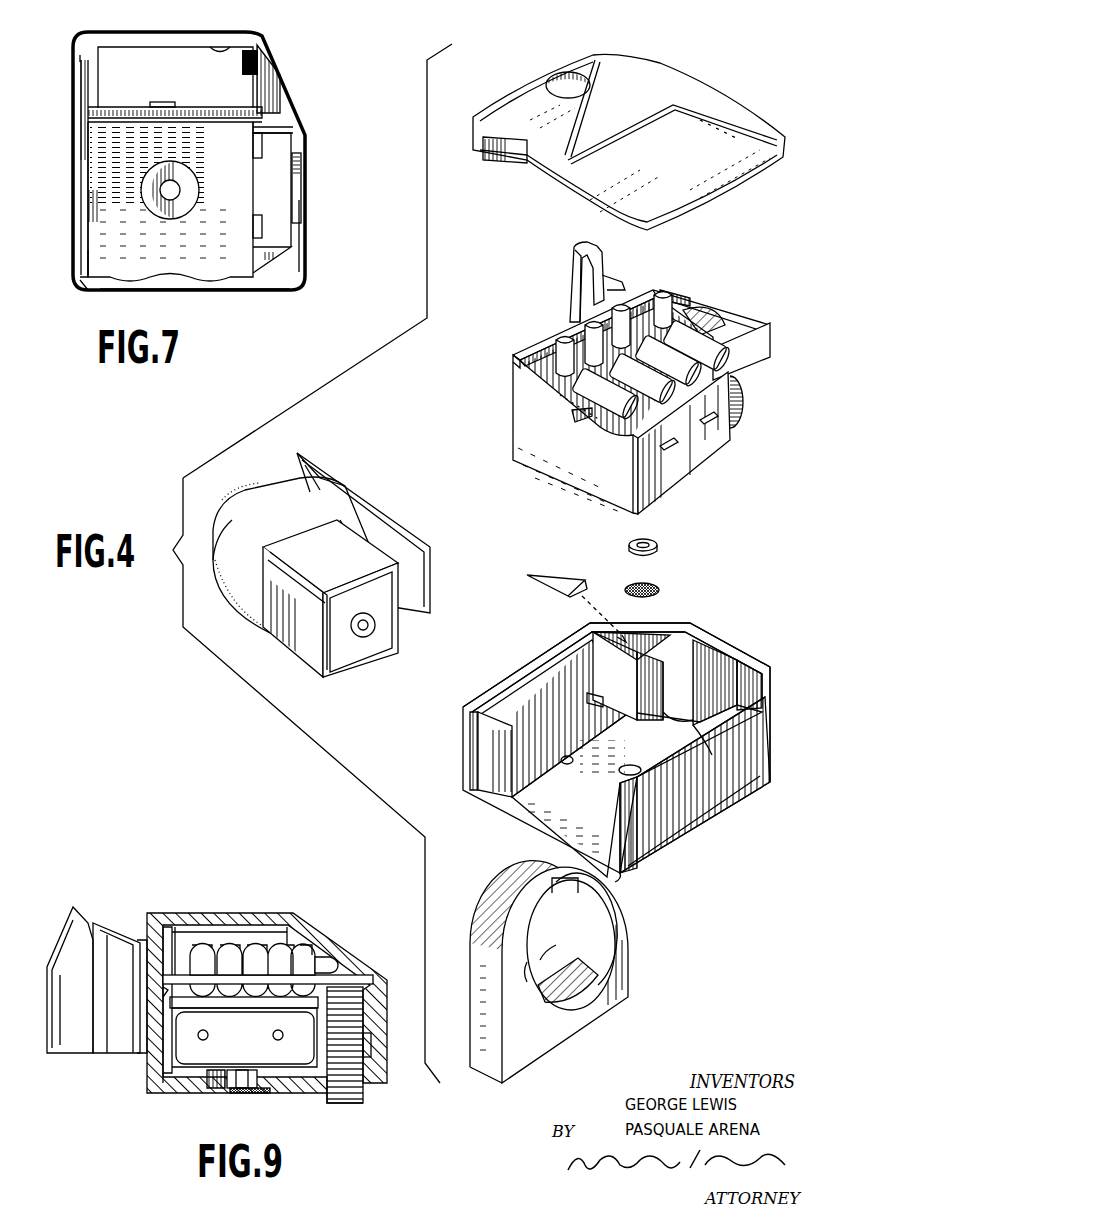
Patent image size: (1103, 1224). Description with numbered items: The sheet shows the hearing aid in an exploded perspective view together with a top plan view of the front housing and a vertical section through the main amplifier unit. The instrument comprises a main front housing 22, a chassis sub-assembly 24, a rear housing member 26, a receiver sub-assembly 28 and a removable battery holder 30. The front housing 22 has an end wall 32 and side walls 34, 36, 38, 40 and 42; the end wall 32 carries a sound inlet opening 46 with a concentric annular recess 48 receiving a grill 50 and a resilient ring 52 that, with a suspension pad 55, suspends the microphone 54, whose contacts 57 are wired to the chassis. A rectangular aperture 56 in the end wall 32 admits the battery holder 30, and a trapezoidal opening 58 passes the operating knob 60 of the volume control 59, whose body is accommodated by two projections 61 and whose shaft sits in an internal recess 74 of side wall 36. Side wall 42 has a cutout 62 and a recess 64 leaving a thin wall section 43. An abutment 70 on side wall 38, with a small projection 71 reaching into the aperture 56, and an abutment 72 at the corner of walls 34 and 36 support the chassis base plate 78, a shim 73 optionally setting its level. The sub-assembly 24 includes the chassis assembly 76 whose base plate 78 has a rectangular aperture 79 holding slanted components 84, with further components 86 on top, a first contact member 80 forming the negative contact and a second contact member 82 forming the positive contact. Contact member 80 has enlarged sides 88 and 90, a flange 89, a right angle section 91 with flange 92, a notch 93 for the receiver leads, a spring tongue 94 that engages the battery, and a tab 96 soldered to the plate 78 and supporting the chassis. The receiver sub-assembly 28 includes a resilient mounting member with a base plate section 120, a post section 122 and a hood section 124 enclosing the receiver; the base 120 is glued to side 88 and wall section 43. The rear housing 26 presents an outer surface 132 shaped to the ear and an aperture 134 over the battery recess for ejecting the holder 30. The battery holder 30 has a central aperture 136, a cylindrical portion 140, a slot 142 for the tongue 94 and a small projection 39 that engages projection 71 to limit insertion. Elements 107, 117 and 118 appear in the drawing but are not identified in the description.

In FIG. 4, the main front housing 22 is at (710, 816).
In FIG. 4, the chassis sub-assembly 24 is at (497, 421).
In FIG. 4, the rear housing member 26 is at (735, 183).
In FIG. 4, the receiver sub-assembly 28 is at (266, 472).
In FIG. 9, the receiver sub-assembly 28 is at (122, 938).
In FIG. 4, the removable battery holder 30 is at (640, 954).
In FIG. 7, the end wall 32 is at (186, 253).
In FIG. 4, the end wall 32 is at (560, 812).
In FIG. 9, the end wall 32 is at (162, 1085).
In FIG. 7, the side wall 34 is at (210, 288).
In FIG. 4, the side wall 34 is at (718, 790).
In FIG. 7, the side wall 36 is at (302, 246).
In FIG. 4, the side wall 36 is at (746, 655).
In FIG. 9, the side wall 36 is at (380, 1050).
In FIG. 7, the side wall 38 is at (288, 91).
In FIG. 4, the side wall 38 is at (648, 628).
In FIG. 4, the small projection 39 is at (592, 960).
In FIG. 7, the side wall 40 is at (184, 33).
In FIG. 4, the side wall 40 is at (523, 661).
In FIG. 7, the side wall 42 is at (87, 56).
In FIG. 4, the side wall 42 is at (466, 715).
In FIG. 7, the short wall section 43 is at (94, 82).
In FIG. 4, the short wall section 43 is at (500, 678).
In FIG. 7, the sound inlet opening 46 is at (174, 184).
In FIG. 9, the sound inlet opening 46 is at (246, 1090).
In FIG. 7, the concentric annular recess 48 is at (189, 199).
In FIG. 4, the concentric annular recess 48 is at (632, 764).
In FIG. 9, the concentric annular recess 48 is at (233, 1090).
In FIG. 4, the grill 50 is at (660, 591).
In FIG. 9, the grill 50 is at (268, 1094).
In FIG. 4, the resilient ring 52 is at (660, 538).
In FIG. 9, the resilient ring 52 is at (208, 1088).
In FIG. 4, the microphone 54 is at (700, 440).
In FIG. 9, the microphone 54 is at (168, 1063).
In FIG. 9, the suspension pad 55 is at (283, 1003).
In FIG. 7, the rectangular aperture 56 is at (228, 50).
In FIG. 4, the rectangular aperture 56 is at (566, 764).
In FIG. 4, the microphone contacts 57 is at (718, 418).
In FIG. 9, the microphone contacts 57 is at (273, 1038).
In FIG. 7, the trapezoidal opening 58 is at (293, 131).
In FIG. 4, the trapezoidal opening 58 is at (708, 750).
In FIG. 9, the trapezoidal opening 58 is at (368, 1085).
In FIG. 4, the volume control 59 is at (758, 400).
In FIG. 9, the volume control operating knob 60 is at (352, 1104).
In FIG. 7, the projections 61 is at (262, 160).
In FIG. 4, the projections 61 is at (652, 715).
In FIG. 7, the cutout 62 is at (76, 244).
In FIG. 4, the cutout 62 is at (620, 877).
In FIG. 7, the recess 64 is at (80, 86).
In FIG. 4, the recess 64 is at (470, 793).
In FIG. 7, the abutment 70 is at (255, 94).
In FIG. 4, the abutment 70 is at (632, 660).
In FIG. 4, the small projection 71 is at (587, 698).
In FIG. 7, the abutment 72 is at (251, 263).
In FIG. 4, the abutment 72 is at (770, 692).
In FIG. 4, the spacer or shim 73 is at (548, 588).
In FIG. 7, the internal recess 74 is at (301, 197).
In FIG. 4, the internal recess 74 is at (715, 647).
In FIG. 9, the internal recess 74 is at (380, 990).
In FIG. 4, the chassis assembly 76 is at (726, 336).
In FIG. 9, the chassis assembly 76 is at (305, 945).
In FIG. 4, the base plate 78 is at (764, 344).
In FIG. 9, the base plate 78 is at (352, 980).
In FIG. 4, the rectangular aperture 79 is at (655, 420).
In FIG. 4, the first contact member 80 is at (567, 470).
In FIG. 4, the second contact member 82 is at (564, 269).
In FIG. 4, the electrical components 84 is at (702, 375).
In FIG. 9, the electrical components 84 is at (252, 995).
In FIG. 4, the electrical components 86 is at (665, 293).
In FIG. 9, the electrical components 86 is at (232, 945).
In FIG. 7, the enlarged side 88 is at (83, 139).
In FIG. 4, the enlarged side 88 is at (556, 435).
In FIG. 9, the enlarged side 88 is at (160, 1045).
In FIG. 4, the small flange 89 is at (639, 500).
In FIG. 7, the enlarged side 90 is at (122, 108).
In FIG. 4, the enlarged side 90 is at (548, 343).
In FIG. 7, the right angle section 91 is at (250, 134).
In FIG. 7, the small flange 92 is at (186, 126).
In FIG. 4, the notch 93 is at (513, 353).
In FIG. 7, the spring tongue contact 94 is at (167, 101).
In FIG. 9, the tab 96 is at (160, 990).
In FIG. 4, the end wall 107 is at (392, 634).
In FIG. 4, the hub 117 is at (367, 640).
In FIG. 4, the side wall 118 is at (300, 646).
In FIG. 4, the base plate section 120 is at (420, 577).
In FIG. 4, the post section 122 is at (335, 513).
In FIG. 9, the post section 122 is at (110, 1040).
In FIG. 4, the rectangular hood section 124 is at (255, 620).
In FIG. 9, the rectangular hood section 124 is at (60, 1040).
In FIG. 4, the outer surface 132 is at (690, 158).
In FIG. 4, the aperture 134 is at (562, 78).
In FIG. 4, the central aperture 136 is at (525, 985).
In FIG. 4, the cylindrical portion 140 is at (556, 945).
In FIG. 4, the slot 142 is at (565, 898).